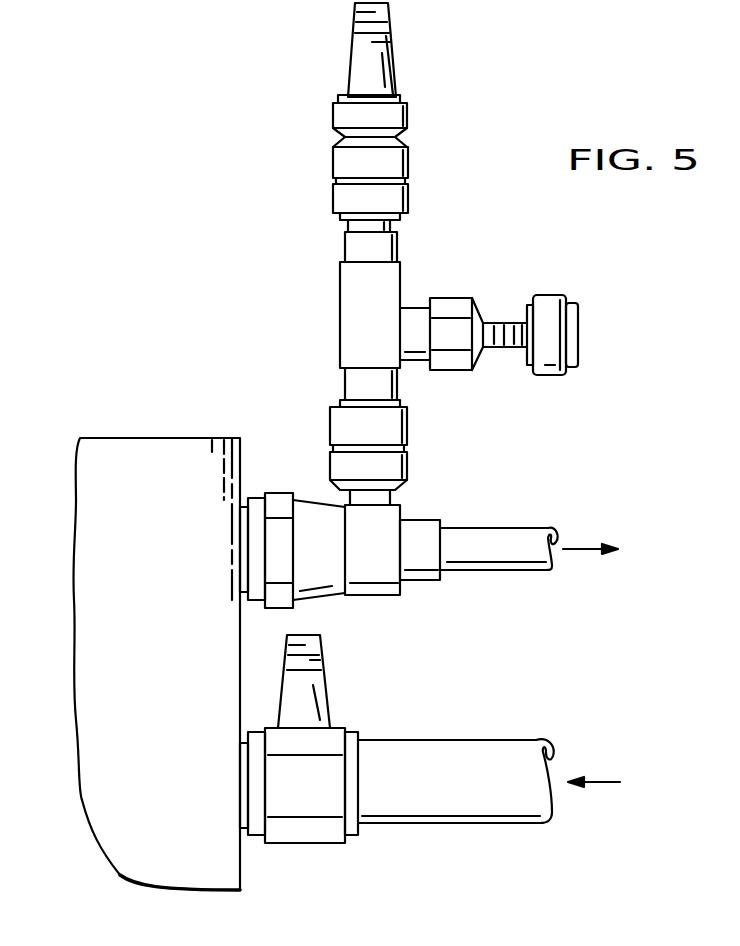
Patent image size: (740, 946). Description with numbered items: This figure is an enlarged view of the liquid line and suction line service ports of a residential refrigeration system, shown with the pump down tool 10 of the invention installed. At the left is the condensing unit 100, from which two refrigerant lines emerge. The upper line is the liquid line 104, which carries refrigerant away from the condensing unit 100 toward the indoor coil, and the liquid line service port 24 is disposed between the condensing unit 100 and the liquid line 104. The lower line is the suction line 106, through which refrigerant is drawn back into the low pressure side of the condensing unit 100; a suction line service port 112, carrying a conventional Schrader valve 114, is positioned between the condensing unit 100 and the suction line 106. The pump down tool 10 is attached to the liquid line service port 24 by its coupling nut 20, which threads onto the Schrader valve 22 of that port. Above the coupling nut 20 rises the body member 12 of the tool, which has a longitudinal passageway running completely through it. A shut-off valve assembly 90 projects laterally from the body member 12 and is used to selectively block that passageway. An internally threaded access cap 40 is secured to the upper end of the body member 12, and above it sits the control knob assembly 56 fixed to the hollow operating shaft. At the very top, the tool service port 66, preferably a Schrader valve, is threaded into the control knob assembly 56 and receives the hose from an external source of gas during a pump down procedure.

The pump down tool 10 is at (318, 50).
The body member 12 is at (352, 305).
The coupling nut 20 is at (396, 422).
The Schrader valve 22 is at (386, 499).
The liquid line service port 24 is at (368, 553).
The access cap 40 is at (340, 163).
The control knob assembly 56 is at (400, 117).
The tool service port 66 is at (375, 72).
The shut-off valve assembly 90 is at (487, 297).
The condensing unit 100 is at (145, 490).
The liquid line 104 is at (510, 545).
The suction line 106 is at (467, 765).
The suction line service port 112 is at (317, 828).
The Schrader valve 114 is at (297, 708).